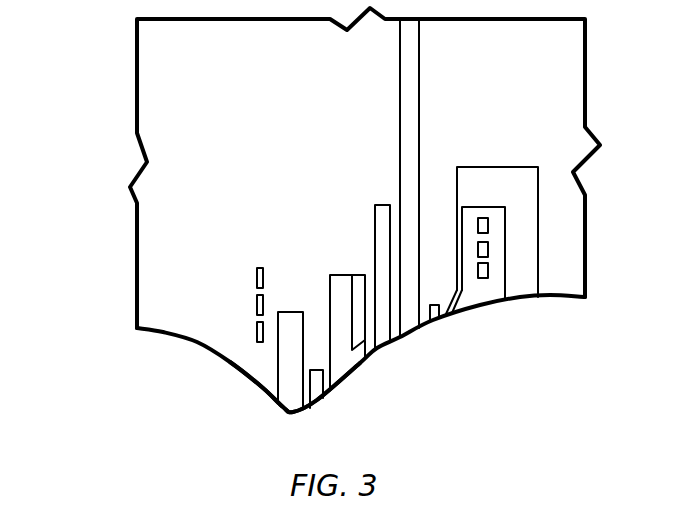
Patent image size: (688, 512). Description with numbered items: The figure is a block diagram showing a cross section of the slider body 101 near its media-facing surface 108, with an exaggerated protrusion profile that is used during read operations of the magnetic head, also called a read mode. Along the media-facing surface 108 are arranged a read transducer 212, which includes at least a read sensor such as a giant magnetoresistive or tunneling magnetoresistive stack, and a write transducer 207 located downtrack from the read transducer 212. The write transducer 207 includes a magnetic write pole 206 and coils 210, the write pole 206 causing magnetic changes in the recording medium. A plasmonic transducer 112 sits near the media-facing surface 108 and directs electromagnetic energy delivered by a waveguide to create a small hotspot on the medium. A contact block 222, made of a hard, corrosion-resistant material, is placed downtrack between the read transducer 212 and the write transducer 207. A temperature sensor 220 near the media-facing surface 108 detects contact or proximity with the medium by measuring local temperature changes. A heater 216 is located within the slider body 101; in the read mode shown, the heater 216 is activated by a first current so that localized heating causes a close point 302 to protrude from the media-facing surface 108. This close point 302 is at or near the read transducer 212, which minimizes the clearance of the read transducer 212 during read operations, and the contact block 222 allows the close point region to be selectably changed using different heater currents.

The slider body 101 is at (61, 96).
The media-facing surface 108 is at (567, 300).
The plasmonic transducer 112 is at (433, 323).
The magnetic write pole 206 is at (452, 318).
The write transducer 207 is at (479, 139).
The coils 210 is at (506, 251).
The read transducer 212 is at (291, 313).
The heater 216 is at (255, 279).
The temperature sensor 220 is at (314, 390).
The contact block 222 is at (352, 283).
The close point 302 is at (288, 414).